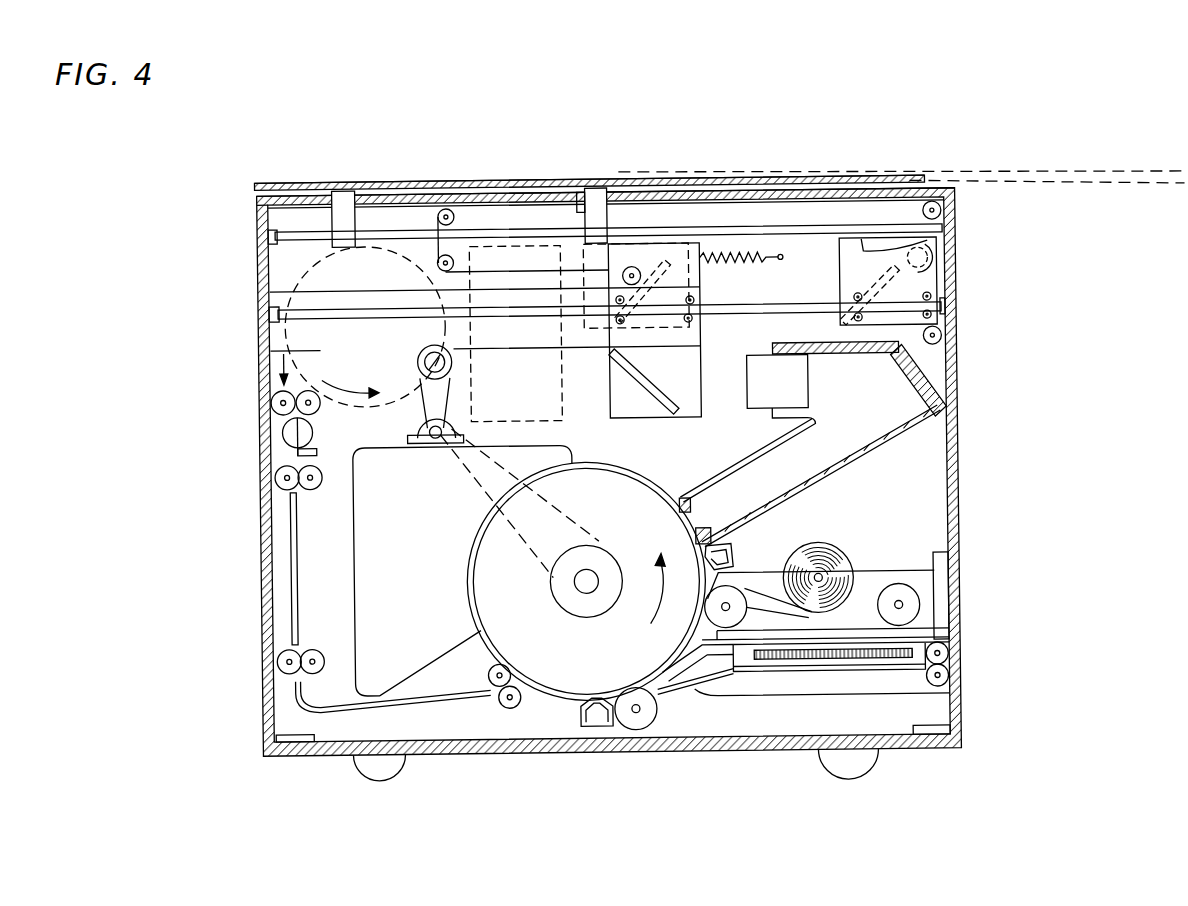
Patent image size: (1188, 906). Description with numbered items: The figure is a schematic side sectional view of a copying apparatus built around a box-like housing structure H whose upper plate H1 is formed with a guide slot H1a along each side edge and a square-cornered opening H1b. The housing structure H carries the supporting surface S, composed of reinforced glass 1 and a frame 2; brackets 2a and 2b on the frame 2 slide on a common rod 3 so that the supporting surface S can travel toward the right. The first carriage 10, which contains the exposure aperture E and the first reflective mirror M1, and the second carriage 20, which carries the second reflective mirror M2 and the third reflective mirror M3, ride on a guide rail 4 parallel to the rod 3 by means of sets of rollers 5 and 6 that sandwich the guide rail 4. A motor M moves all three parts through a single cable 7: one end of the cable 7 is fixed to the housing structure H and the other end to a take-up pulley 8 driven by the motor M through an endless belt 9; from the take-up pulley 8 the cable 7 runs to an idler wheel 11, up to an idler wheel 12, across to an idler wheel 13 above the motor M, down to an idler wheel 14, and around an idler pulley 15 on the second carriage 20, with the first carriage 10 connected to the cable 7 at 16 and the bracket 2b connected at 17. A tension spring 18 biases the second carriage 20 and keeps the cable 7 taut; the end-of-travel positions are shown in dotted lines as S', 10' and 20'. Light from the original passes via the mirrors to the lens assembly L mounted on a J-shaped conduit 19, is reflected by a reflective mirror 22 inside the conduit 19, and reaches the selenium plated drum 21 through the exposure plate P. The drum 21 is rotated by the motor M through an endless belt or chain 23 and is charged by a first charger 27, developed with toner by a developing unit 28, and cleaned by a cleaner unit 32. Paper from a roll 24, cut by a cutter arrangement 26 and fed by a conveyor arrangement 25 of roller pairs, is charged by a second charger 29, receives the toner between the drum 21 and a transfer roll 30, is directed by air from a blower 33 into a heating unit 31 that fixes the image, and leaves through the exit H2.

The reinforced glass 1 is at (511, 180).
The frame 2 is at (266, 180).
The bracket 2a is at (344, 189).
The bracket 2b is at (601, 189).
The common rod 3 is at (907, 228).
The guide rail 4 is at (806, 306).
The rollers 5 is at (857, 318).
The rollers 6 is at (695, 320).
The cable 7 is at (319, 286).
The take-up pulley 8 is at (426, 345).
The endless belt 9 is at (423, 379).
The first carriage 10 is at (960, 310).
The first carriage (end-of-travel position) 10' is at (627, 315).
The idler wheel 11 is at (944, 341).
The idler wheel 12 is at (945, 214).
The idler wheel 13 is at (450, 207).
The idler wheel 14 is at (440, 262).
The idler pulley 15 is at (637, 267).
The cable connection of first carriage 16 is at (905, 350).
The cable connection of bracket 2b 17 is at (582, 196).
The tension spring 18 is at (742, 262).
The J-shaped conduit 19 is at (942, 420).
The second carriage 20 is at (652, 348).
The second carriage (end-of-travel position) 20' is at (515, 347).
The selenium plated drum 21 is at (554, 677).
The reflective mirror 22 is at (942, 398).
The endless belt or chain 23 is at (468, 484).
The roll of paper 24 is at (278, 368).
The conveyor arrangement 25 is at (290, 601).
The cutter arrangement 26 is at (283, 424).
The first charger 27 is at (732, 549).
The developing unit 28 is at (375, 680).
The second charger 29 is at (592, 727).
The transfer roll 30 is at (633, 731).
The heating unit 31 is at (815, 660).
The cleaner unit 32 is at (889, 579).
The blower 33 is at (711, 658).
The housing structure H is at (268, 553).
The upper plate H1 is at (301, 200).
The guide slot H1a is at (377, 201).
The square-cornered opening H1b is at (806, 191).
The exit H2 is at (956, 668).
The supporting surface S is at (589, 158).
The supporting surface (end-of-travel position) S' is at (901, 160).
The motor M is at (430, 428).
The first reflective mirror M1 is at (942, 266).
The second reflective mirror M2 is at (667, 262).
The third reflective mirror M3 is at (674, 402).
The lens assembly L is at (757, 411).
The exposure plate P is at (712, 530).
The exposure aperture E is at (940, 250).